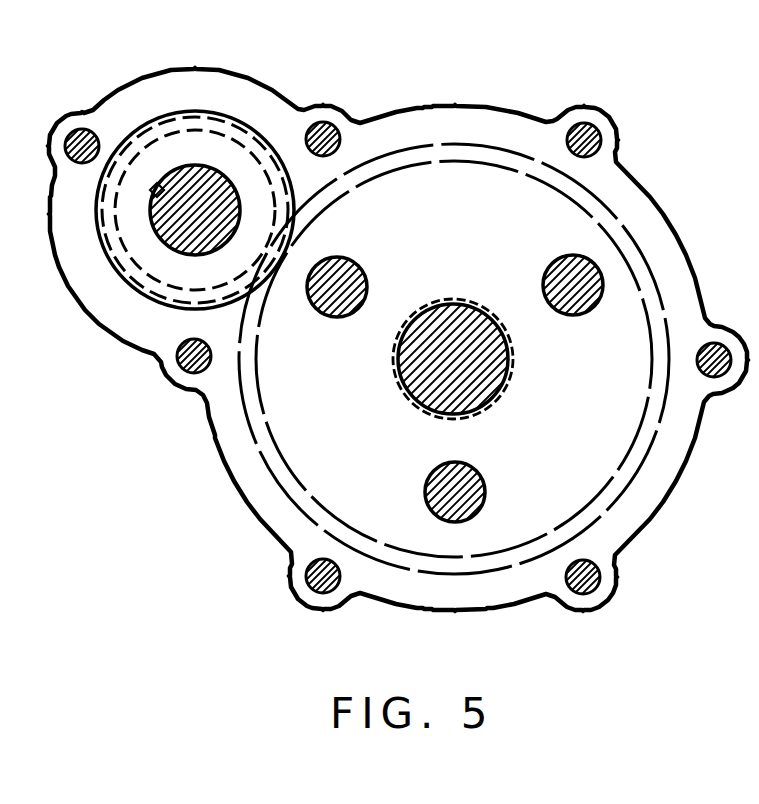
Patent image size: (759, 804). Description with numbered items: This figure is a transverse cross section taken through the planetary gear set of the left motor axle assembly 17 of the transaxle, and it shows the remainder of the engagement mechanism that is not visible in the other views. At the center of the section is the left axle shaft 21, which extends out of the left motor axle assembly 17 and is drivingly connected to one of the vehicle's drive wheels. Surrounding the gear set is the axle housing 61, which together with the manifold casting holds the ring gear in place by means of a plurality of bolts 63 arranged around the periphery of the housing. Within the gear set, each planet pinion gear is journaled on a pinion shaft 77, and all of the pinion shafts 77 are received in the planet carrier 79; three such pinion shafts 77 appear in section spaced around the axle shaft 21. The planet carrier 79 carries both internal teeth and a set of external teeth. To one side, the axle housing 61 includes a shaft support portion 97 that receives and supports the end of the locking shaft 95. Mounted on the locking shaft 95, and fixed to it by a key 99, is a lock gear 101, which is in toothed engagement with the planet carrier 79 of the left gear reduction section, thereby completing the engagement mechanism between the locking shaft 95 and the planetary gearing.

The left motor axle assembly 17 is at (208, 501).
The left axle shaft 21 is at (462, 335).
The axle housing 61 is at (510, 124).
The bolts 63 is at (179, 366).
The pinion shaft 77 is at (343, 282).
The planet carrier 79 is at (620, 278).
The locking shaft 95 is at (216, 197).
The shaft support portion 97 is at (230, 92).
The key 99 is at (155, 189).
The lock gear 101 is at (200, 122).